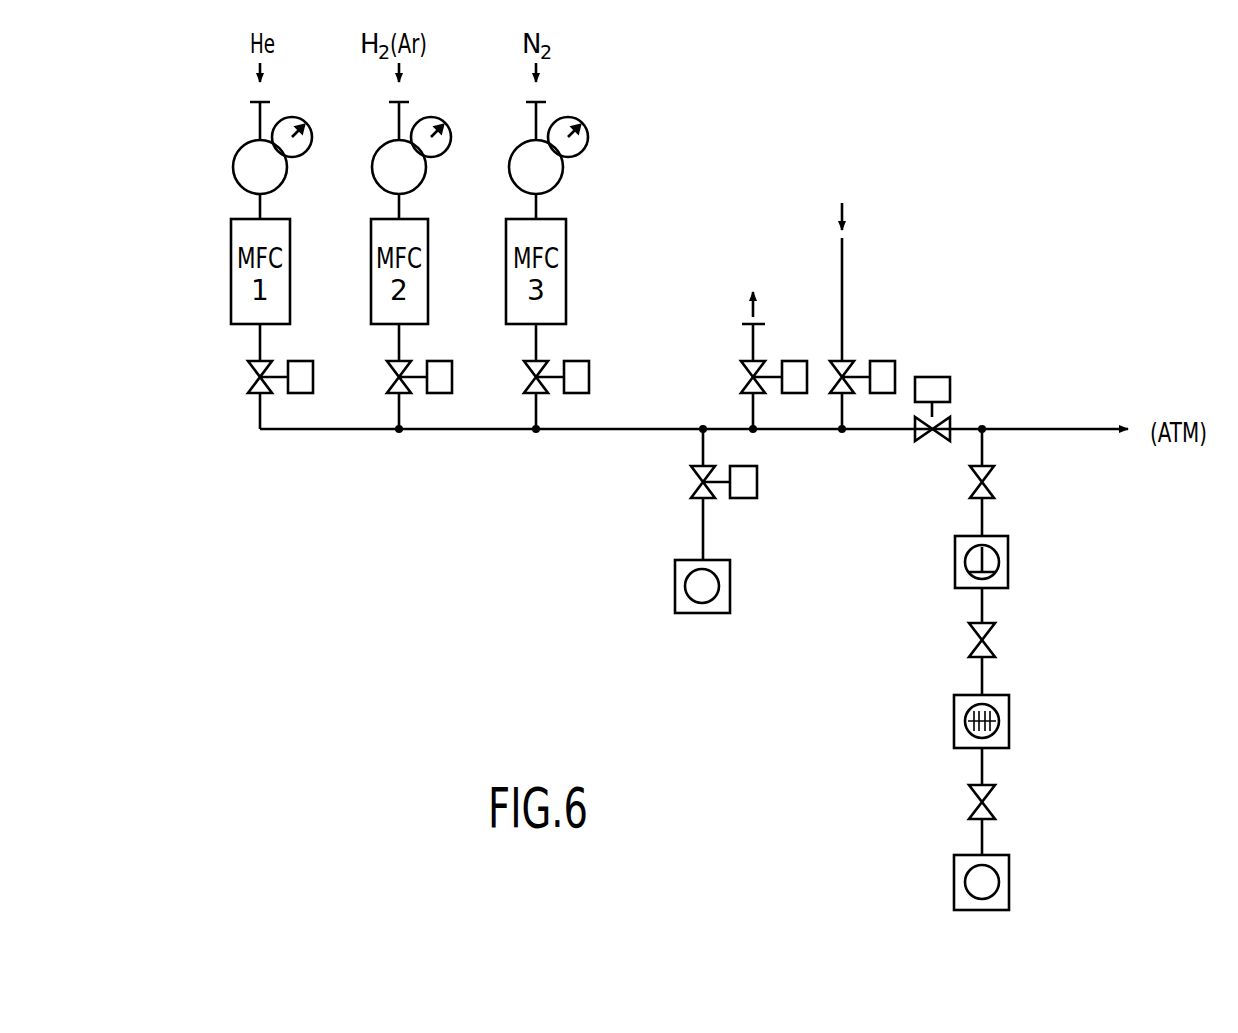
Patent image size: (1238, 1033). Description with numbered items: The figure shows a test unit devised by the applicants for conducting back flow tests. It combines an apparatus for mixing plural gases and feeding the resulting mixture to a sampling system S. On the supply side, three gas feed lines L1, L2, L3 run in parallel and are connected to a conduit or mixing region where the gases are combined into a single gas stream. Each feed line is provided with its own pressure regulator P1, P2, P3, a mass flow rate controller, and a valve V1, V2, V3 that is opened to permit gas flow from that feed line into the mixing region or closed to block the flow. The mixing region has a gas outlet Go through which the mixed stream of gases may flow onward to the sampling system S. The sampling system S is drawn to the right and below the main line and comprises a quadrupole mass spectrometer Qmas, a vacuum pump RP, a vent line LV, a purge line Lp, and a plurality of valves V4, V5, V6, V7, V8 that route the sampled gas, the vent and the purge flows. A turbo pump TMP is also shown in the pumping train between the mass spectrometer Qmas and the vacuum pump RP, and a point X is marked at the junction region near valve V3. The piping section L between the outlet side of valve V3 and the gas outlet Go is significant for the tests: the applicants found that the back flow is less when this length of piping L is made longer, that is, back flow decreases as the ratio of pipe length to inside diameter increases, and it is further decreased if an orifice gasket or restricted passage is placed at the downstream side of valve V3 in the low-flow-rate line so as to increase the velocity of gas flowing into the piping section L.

The pressure regulator P1 is at (237, 153).
The pressure regulator P2 is at (376, 153).
The pressure regulator P3 is at (513, 153).
The gas feed line L1 is at (258, 345).
The gas feed line L2 is at (397, 345).
The gas feed line L3 is at (534, 345).
The valve V1 is at (250, 388).
The valve V2 is at (389, 388).
The valve V3 is at (526, 388).
The valve V4 is at (757, 480).
The valve V5 is at (742, 380).
The valve V6 is at (846, 362).
The valve V7 is at (950, 395).
The valve V8 is at (995, 482).
The vent line LV is at (753, 342).
The purge line Lp is at (842, 290).
The length of pipe between valve V3 and outlet Go L is at (546, 396).
The sample connection point X is at (514, 402).
The gas outlet Go is at (536, 440).
The sampling system S is at (1048, 375).
The vacuum pump RP is at (730, 582).
The quadrupole mass spectrometer Qmas is at (1008, 560).
The turbo molecular pump TMP is at (1009, 725).